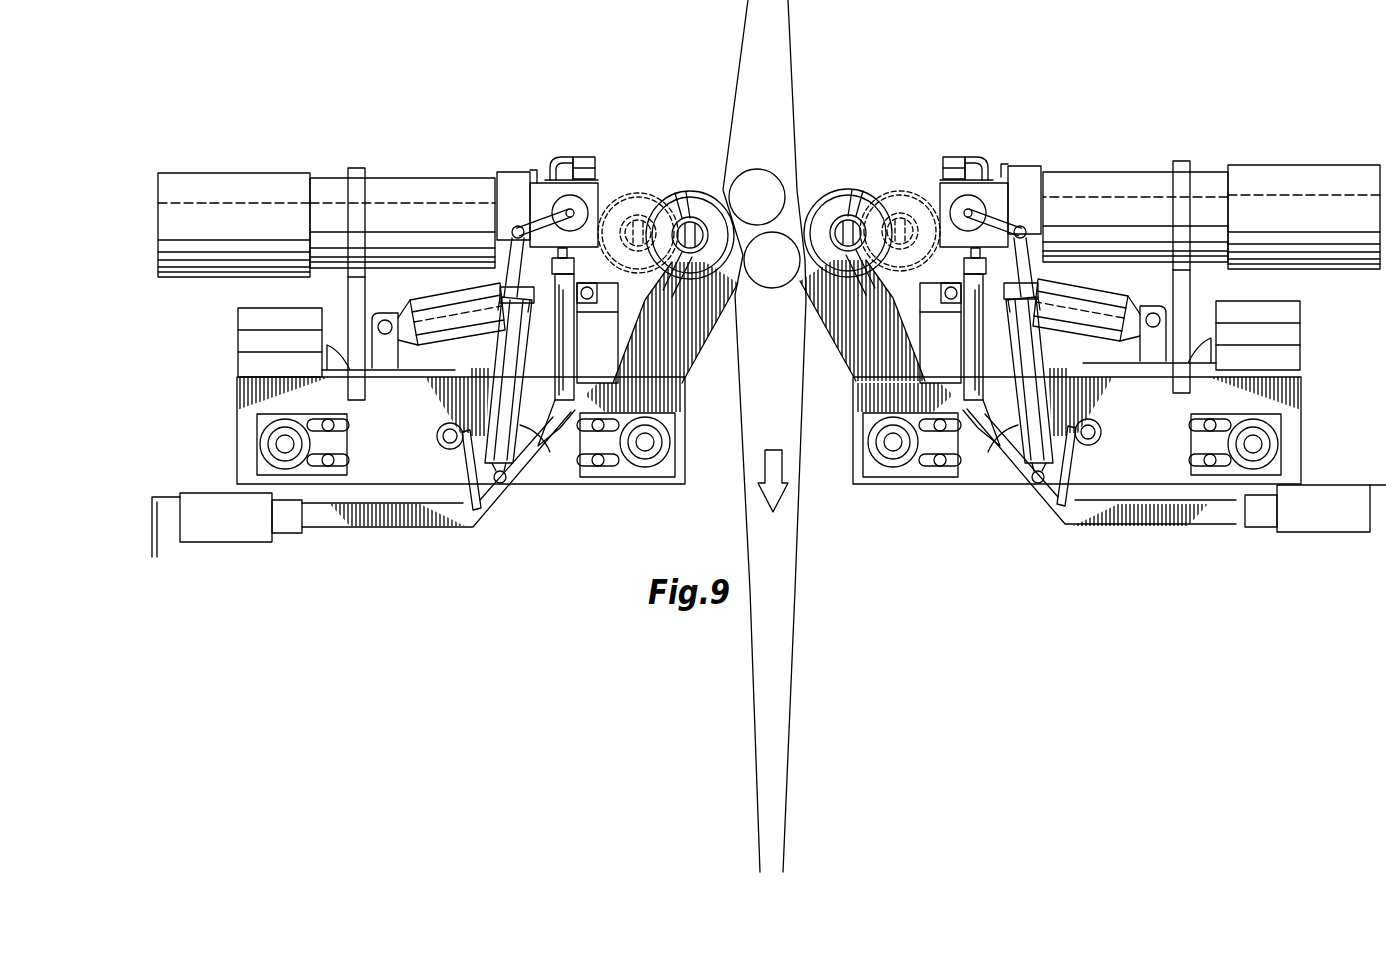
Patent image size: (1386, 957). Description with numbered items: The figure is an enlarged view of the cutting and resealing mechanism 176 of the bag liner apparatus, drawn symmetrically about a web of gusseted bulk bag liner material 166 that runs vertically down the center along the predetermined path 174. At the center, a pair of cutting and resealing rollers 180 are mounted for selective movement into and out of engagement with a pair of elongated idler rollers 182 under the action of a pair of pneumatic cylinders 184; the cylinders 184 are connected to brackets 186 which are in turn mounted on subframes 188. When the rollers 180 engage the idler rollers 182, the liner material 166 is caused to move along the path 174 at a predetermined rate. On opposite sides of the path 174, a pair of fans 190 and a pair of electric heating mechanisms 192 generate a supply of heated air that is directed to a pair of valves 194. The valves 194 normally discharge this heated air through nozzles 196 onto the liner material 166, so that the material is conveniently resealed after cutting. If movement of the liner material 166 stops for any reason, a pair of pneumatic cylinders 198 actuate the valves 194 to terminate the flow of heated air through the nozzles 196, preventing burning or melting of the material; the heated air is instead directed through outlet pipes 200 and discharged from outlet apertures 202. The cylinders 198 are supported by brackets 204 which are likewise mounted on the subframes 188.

The gusseted bulk bag liner material 166 is at (740, 46).
The predetermined path 174 is at (788, 472).
The mechanism 176 is at (302, 80).
The cutting and resealing rollers 180 is at (693, 191).
The elongated idler rollers 182 is at (766, 168).
The pneumatic cylinders 184 is at (482, 323).
The brackets 186 is at (420, 350).
The subframes 188 is at (427, 424).
The fans 190 is at (254, 232).
The electric heating mechanisms 192 is at (447, 233).
The valves 194 is at (543, 183).
The nozzles 196 is at (590, 148).
The pneumatic cylinders 198 is at (545, 457).
The outlet pipes 200 is at (385, 528).
The outlet apertures 202 is at (178, 530).
The brackets 204 is at (465, 467).